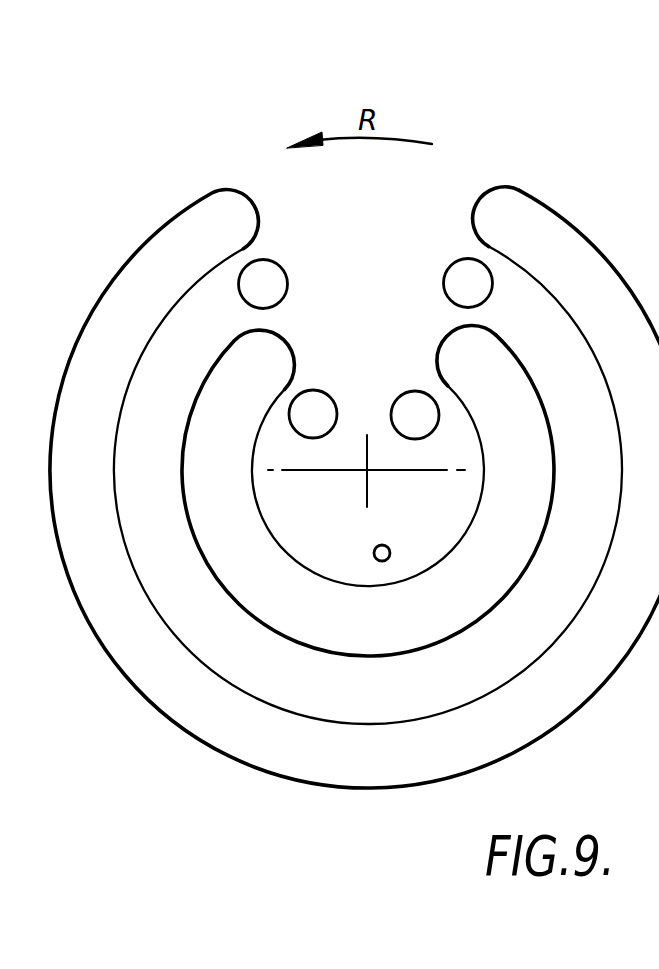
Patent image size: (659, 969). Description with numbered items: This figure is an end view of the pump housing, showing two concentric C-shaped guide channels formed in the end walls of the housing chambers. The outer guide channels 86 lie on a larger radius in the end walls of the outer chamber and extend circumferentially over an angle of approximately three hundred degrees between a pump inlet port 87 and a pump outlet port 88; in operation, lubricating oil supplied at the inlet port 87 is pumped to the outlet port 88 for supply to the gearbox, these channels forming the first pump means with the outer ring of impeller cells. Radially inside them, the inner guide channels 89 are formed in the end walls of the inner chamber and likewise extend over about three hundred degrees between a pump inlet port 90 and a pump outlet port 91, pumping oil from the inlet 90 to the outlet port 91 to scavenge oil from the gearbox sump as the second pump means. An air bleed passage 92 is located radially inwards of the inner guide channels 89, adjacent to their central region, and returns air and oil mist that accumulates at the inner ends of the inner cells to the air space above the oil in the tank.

The outer guide channels 86 is at (553, 257).
The pump inlet port 87 is at (270, 275).
The pump outlet port 88 is at (460, 270).
The inner guide channels 89 is at (480, 582).
The pump inlet port 90 is at (308, 408).
The pump outlet port 91 is at (410, 408).
The passage 92 is at (373, 553).